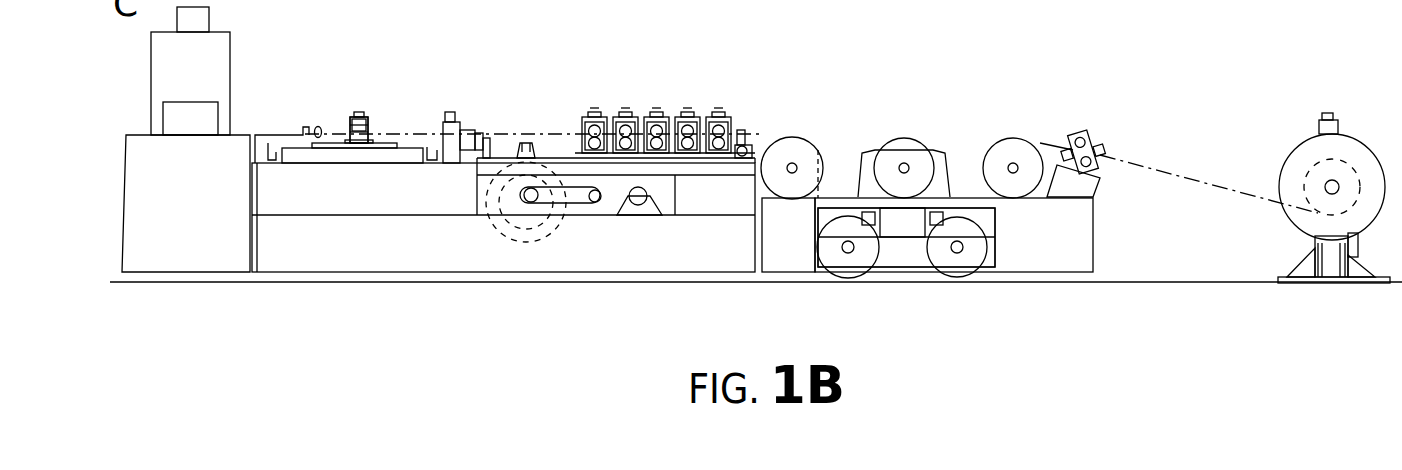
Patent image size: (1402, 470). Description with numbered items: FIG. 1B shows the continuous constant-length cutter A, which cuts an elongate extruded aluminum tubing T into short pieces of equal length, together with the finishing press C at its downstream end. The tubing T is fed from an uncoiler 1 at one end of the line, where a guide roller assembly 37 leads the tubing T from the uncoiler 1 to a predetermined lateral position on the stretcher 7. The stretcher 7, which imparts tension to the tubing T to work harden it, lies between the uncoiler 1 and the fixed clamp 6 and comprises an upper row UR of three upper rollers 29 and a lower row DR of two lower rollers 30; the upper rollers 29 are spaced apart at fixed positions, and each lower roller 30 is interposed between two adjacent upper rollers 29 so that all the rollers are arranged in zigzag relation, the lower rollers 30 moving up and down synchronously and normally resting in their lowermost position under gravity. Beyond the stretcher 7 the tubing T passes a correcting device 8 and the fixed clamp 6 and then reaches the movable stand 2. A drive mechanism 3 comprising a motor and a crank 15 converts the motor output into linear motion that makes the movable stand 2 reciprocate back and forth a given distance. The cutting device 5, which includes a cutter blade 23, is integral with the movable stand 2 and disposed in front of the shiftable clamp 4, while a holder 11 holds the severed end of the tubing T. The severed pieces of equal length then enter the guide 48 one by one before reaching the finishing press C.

The uncoiler 1 is at (1346, 145).
The movable stand 2 is at (373, 148).
The drive mechanism 3 is at (520, 198).
The shiftable clamp 4 is at (362, 120).
The cutting device 5 is at (358, 117).
The fixed clamp 6 is at (447, 113).
The stretcher 7 is at (948, 134).
The correcting device 8 is at (686, 102).
The holder 11 is at (318, 125).
The crank 15 is at (532, 142).
The cutter blade 23 is at (334, 75).
The upper rollers 29 is at (795, 148).
The lower rollers 30 is at (858, 260).
The guide roller assembly 37 is at (1088, 145).
The guide 48 is at (265, 135).
The finishing press C is at (143, 147).
The upper row UR is at (833, 145).
The lower row DR is at (817, 270).
The continuous constant-length cutter A is at (1066, 92).
The tubing T is at (1178, 176).